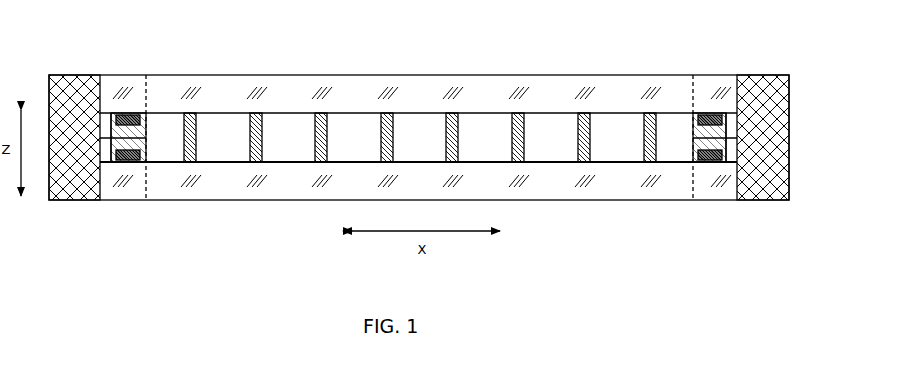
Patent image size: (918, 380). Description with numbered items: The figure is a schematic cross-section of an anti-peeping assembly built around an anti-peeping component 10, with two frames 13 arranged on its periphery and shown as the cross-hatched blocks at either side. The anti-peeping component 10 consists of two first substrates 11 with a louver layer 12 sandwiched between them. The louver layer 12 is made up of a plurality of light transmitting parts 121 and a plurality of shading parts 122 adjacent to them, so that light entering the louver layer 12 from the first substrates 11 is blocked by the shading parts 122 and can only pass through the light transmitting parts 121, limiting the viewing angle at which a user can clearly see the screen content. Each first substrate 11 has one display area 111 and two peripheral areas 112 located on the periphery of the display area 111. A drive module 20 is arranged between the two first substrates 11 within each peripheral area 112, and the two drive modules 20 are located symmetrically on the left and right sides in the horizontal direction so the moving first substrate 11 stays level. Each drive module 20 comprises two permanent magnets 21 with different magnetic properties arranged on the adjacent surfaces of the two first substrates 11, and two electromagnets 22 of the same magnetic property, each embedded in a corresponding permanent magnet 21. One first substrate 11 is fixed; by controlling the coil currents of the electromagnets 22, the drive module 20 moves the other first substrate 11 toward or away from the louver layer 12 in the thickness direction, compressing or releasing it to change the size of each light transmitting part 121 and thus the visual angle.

The anti-peeping component 10 is at (773, 245).
The first substrate 11 is at (162, 103).
The louver layer 12 is at (413, 185).
The frame 13 is at (74, 200).
The drive module 20 is at (470, 109).
The permanent magnet 21 is at (730, 131).
The electromagnet 22 is at (728, 117).
The display area 111 is at (147, 50).
The peripheral area 112 is at (147, 50).
The light transmitting part 121 is at (228, 150).
The shading part 122 is at (190, 163).